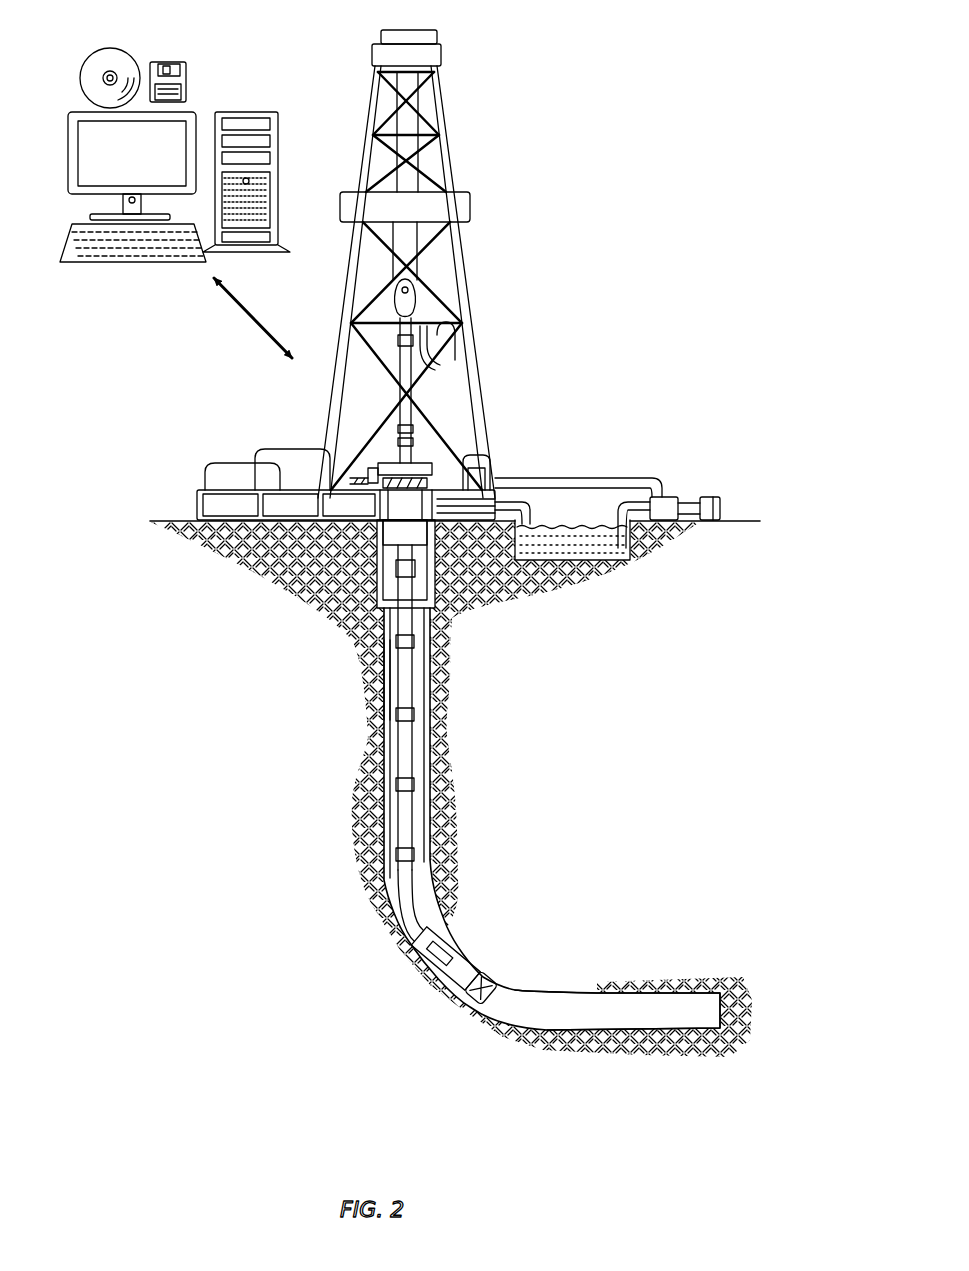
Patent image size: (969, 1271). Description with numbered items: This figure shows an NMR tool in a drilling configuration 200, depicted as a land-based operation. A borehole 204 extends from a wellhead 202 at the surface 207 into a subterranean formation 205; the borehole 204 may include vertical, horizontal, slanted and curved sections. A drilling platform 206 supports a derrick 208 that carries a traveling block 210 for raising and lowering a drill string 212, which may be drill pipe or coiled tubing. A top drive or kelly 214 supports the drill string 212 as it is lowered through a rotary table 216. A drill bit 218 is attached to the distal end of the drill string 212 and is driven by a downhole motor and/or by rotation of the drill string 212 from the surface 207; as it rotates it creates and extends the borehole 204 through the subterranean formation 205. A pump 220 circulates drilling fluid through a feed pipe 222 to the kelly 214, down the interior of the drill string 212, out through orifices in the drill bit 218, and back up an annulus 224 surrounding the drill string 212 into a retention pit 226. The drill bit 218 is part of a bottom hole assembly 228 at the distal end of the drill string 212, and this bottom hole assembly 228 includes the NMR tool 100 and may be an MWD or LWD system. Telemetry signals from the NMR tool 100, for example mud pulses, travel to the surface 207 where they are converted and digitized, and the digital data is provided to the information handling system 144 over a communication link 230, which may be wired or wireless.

The NMR tool 100 is at (455, 940).
The information handling system 144 is at (226, 88).
The drilling configuration 200 is at (630, 68).
The wellhead 202 is at (442, 480).
The borehole 204 is at (423, 745).
The subterranean formation 205 is at (626, 797).
The drilling platform 206 is at (197, 509).
The surface 207 is at (733, 520).
The derrick 208 is at (445, 168).
The traveling block 210 is at (396, 309).
The drill string 212 is at (414, 680).
The top drive or kelly 214 is at (400, 356).
The rotary table 216 is at (388, 462).
The drill bit 218 is at (500, 995).
The pump 220 is at (668, 497).
The feed pipe 222 is at (568, 478).
The annulus 224 is at (385, 712).
The retention pit 226 is at (573, 562).
The bottom hole assembly 228 is at (406, 952).
The communication link 230 is at (254, 318).